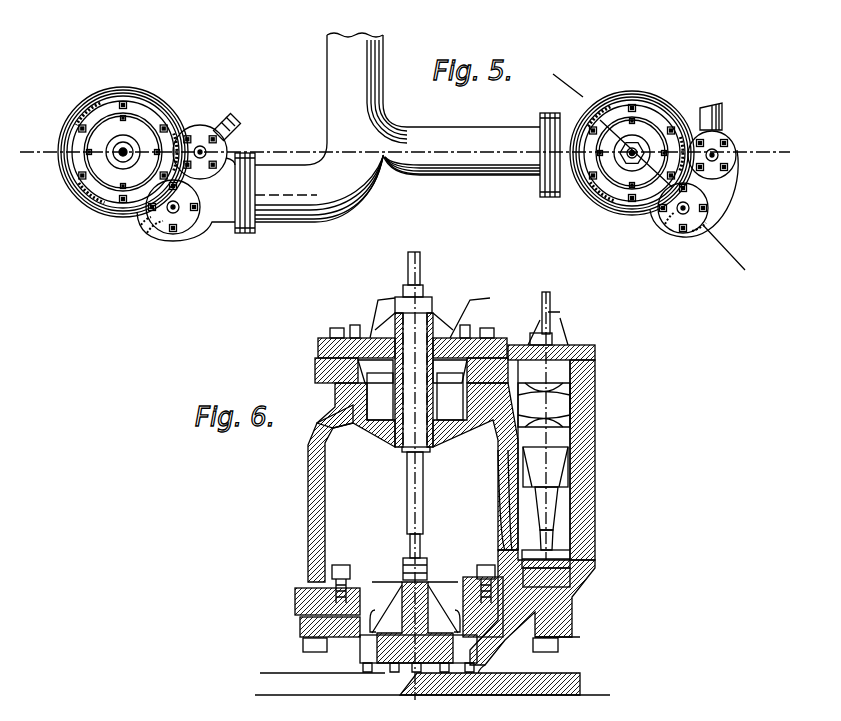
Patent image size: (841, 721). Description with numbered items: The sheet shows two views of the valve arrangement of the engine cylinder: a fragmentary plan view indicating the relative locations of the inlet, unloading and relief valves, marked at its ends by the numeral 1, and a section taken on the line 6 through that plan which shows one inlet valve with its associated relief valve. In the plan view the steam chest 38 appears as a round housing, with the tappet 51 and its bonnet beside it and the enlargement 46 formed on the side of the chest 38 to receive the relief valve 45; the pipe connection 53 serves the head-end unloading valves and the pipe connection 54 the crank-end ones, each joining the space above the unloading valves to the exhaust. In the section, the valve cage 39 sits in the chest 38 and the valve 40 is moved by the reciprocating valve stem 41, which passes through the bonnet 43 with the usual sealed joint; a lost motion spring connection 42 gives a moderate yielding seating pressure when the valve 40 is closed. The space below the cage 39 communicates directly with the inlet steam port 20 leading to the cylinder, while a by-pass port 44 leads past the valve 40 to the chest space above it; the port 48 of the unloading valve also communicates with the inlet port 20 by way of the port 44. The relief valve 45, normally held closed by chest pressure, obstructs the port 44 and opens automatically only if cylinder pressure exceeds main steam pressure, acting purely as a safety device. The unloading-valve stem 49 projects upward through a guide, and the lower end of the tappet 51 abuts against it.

In FIG. 5, the valve unit 1 is at (58, 152).
In FIG. 5, the section line 6- 6 is at (648, 174).
In FIG. 6, the inlet steam port 20 is at (408, 688).
In FIG. 5, the steam chest 38 is at (95, 207).
In FIG. 6, the steam chest 38 is at (340, 502).
In FIG. 6, the valve cage 39 is at (363, 588).
In FIG. 6, the valve 40 is at (437, 600).
In FIG. 5, the valve stem 41 is at (130, 145).
In FIG. 6, the valve stem 41 is at (418, 551).
In FIG. 6, the lost motion spring connection 42 is at (405, 570).
In FIG. 6, the bonnet 43 is at (453, 340).
In FIG. 6, the by-pass port 44 is at (510, 623).
In FIG. 6, the relief valve 45 is at (578, 580).
In FIG. 5, the enlargement 46 is at (160, 221).
In FIG. 6, the enlargement 46 is at (597, 435).
In FIG. 6, the port 48 is at (547, 577).
In FIG. 5, the stem 49 is at (173, 211).
In FIG. 6, the stem 49 is at (553, 305).
In FIG. 5, the tappet 51 is at (200, 148).
In FIG. 5, the pipe connection 53 is at (229, 121).
In FIG. 5, the pipe connection 54 is at (724, 126).